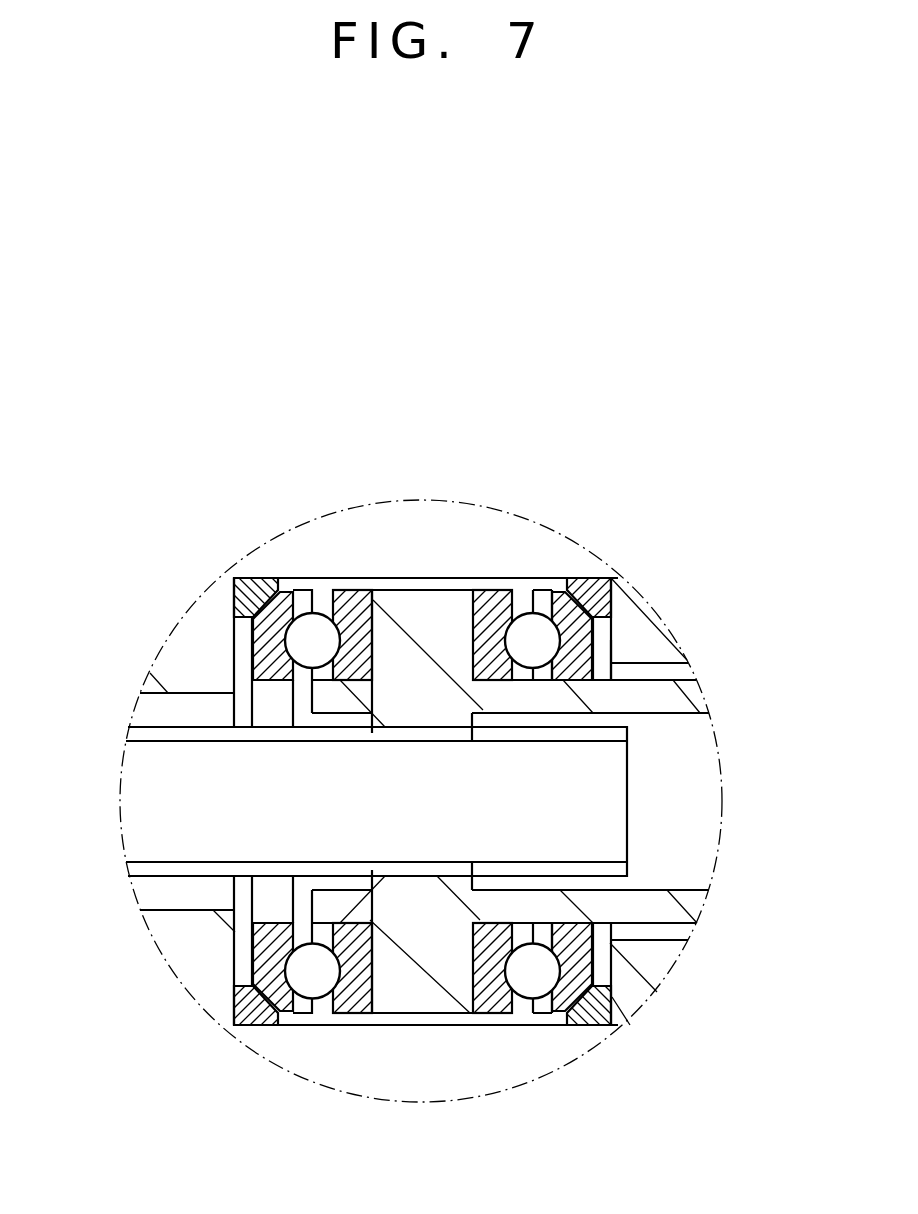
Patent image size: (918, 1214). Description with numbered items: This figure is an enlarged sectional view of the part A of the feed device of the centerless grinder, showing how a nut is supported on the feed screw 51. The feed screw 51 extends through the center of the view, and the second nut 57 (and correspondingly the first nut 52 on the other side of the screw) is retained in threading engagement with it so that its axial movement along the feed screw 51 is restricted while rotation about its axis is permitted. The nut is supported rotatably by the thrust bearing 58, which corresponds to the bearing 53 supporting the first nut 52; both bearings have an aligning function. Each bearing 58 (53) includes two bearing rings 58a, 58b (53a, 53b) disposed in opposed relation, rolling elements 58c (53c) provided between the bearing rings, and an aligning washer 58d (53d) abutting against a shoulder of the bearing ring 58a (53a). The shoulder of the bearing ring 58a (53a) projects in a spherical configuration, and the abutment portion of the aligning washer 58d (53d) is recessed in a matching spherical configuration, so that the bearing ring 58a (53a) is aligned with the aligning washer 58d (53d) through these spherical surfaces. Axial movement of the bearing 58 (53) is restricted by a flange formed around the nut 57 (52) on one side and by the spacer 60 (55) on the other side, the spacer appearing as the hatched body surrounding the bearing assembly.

The feed screw 51 is at (128, 777).
The first nut 52 is at (695, 907).
The bearing 53 is at (418, 771).
The bearing ring 53a is at (611, 640).
The bearing ring 53b is at (345, 590).
The rolling elements 53c is at (310, 612).
The aligning washer 53d is at (250, 578).
The spacer 55 is at (663, 962).
The second nut 57 is at (653, 801).
The bearing 58 is at (418, 771).
The bearing ring 58a is at (253, 655).
The bearing ring 58b is at (423, 686).
The rolling elements 58c is at (426, 675).
The aligning washer 58d is at (404, 722).
The spacer 60 is at (470, 821).
The part A is at (723, 752).